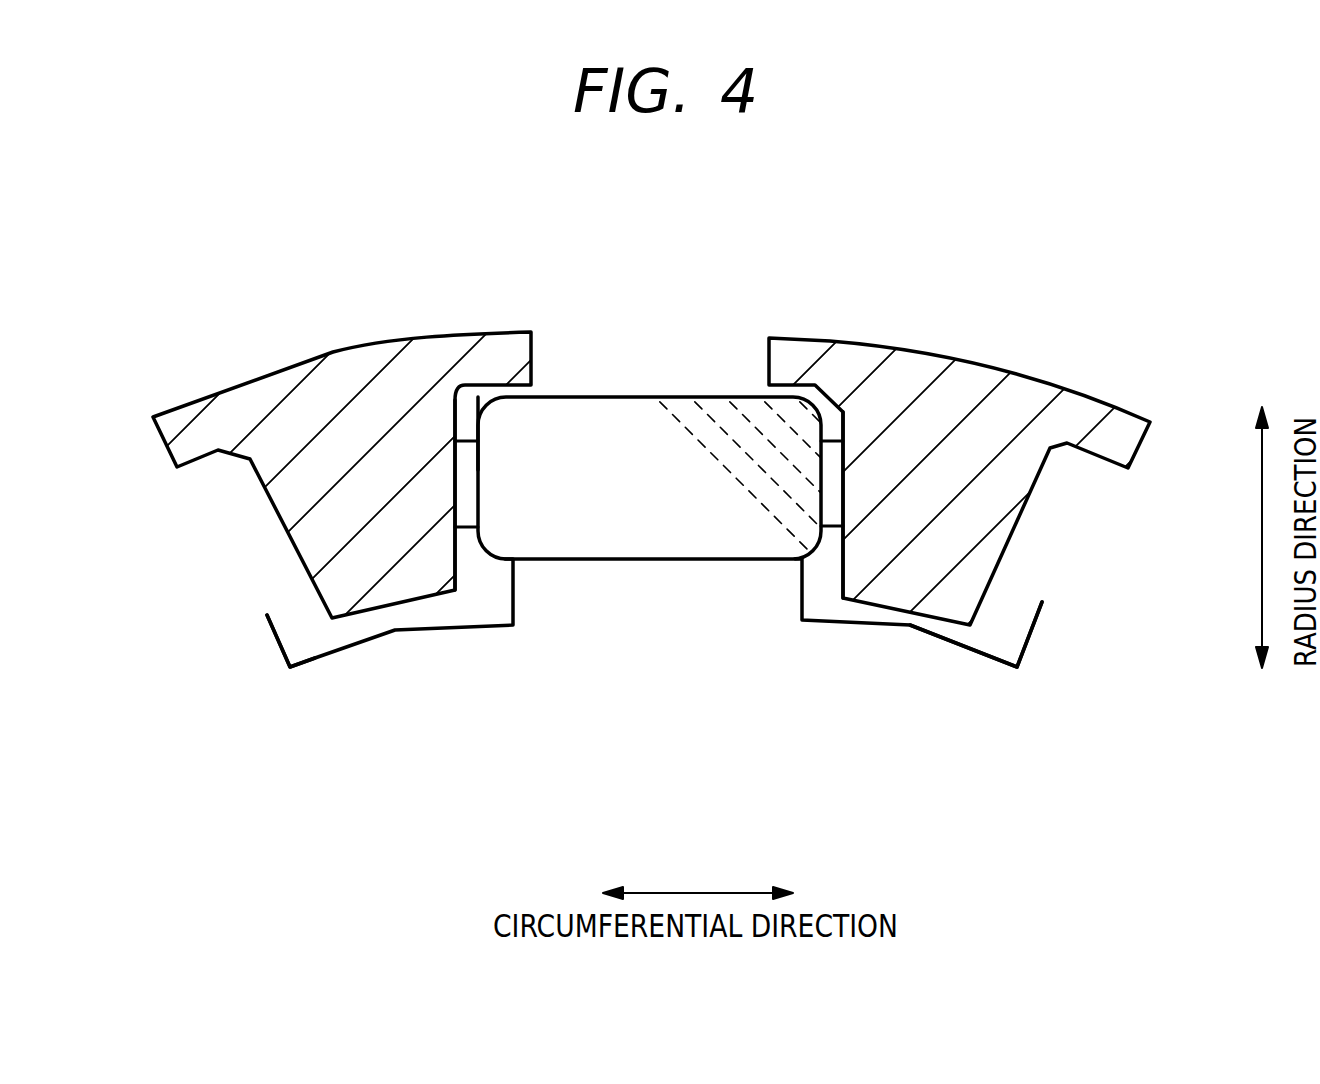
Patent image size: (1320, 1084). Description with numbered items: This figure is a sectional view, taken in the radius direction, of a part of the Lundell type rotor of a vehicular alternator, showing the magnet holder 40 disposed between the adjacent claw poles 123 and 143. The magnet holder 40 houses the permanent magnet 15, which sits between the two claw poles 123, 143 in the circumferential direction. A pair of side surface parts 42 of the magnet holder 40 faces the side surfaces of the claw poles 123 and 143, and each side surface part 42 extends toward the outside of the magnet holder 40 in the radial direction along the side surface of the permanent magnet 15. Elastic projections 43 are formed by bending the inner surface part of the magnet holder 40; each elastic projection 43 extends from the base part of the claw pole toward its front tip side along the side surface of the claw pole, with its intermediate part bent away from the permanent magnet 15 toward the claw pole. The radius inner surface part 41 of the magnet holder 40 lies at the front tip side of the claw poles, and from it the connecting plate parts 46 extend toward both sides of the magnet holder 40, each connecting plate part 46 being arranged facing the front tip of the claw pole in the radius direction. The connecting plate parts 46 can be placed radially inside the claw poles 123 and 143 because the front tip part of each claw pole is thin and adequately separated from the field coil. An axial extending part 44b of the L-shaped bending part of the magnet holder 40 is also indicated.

The permanent magnet 15 is at (613, 495).
The magnet holder 40 is at (711, 576).
The radius inner surface part 41 is at (637, 562).
The side surface part 42 is at (480, 470).
The elastic projection 43 is at (450, 450).
The axial extending part 44b is at (553, 395).
The connecting plate part 46 is at (313, 660).
The claw pole 123 is at (320, 453).
The claw pole 143 is at (987, 375).